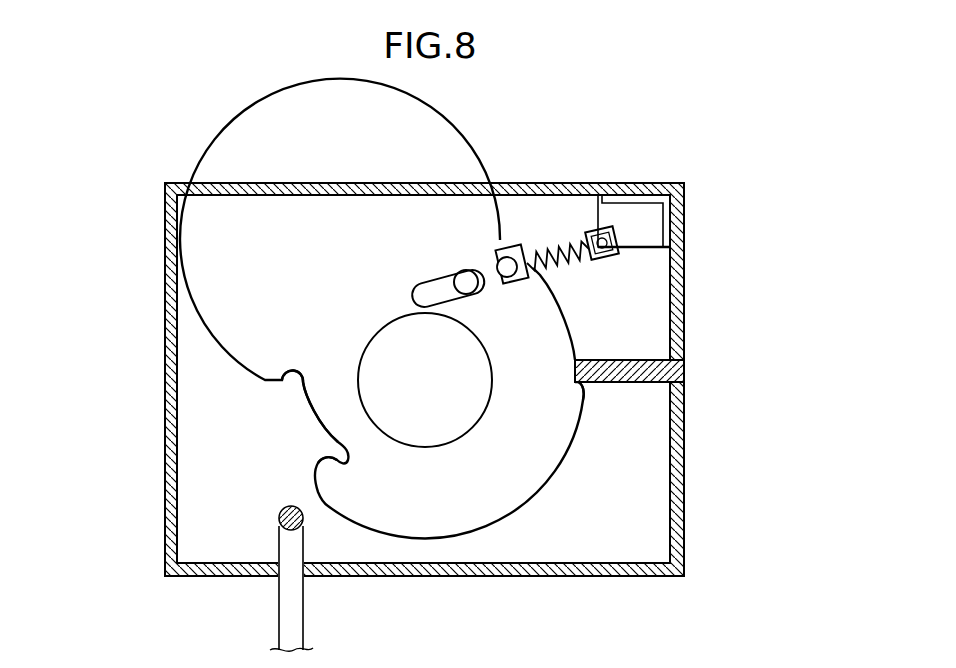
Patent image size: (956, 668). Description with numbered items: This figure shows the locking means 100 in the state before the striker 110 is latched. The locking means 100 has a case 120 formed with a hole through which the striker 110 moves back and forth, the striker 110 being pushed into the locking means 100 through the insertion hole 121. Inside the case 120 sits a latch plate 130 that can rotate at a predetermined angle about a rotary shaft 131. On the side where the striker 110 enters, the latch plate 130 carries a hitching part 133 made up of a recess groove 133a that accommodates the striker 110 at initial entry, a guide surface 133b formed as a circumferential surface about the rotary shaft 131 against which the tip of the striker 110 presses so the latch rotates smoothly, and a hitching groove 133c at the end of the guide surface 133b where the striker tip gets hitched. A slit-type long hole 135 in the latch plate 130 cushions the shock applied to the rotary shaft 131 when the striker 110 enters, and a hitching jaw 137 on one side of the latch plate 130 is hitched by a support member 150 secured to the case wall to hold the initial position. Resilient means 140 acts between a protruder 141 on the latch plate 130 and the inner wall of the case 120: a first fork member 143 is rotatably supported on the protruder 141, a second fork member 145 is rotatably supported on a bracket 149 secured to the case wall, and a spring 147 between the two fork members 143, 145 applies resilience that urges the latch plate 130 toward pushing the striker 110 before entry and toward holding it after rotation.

The locking means 100 is at (121, 133).
The striker 110 is at (287, 615).
The case 120 is at (680, 480).
The insertion hole 121 is at (290, 576).
The latch plate 130 is at (348, 280).
The rotary shaft 131 is at (465, 283).
The hitching part 133 is at (296, 418).
The recess groove 133a is at (283, 392).
The guide surface 133b is at (316, 425).
The hitching groove 133c is at (344, 462).
The long hole 135 is at (428, 292).
The hitching jaw 137 is at (585, 395).
The resilient means 140 is at (551, 237).
The protruder 141 is at (498, 266).
The first fork member 143 is at (503, 245).
The second fork member 145 is at (600, 226).
The spring 147 is at (566, 262).
The bracket 149 is at (643, 223).
The support member 150 is at (625, 360).